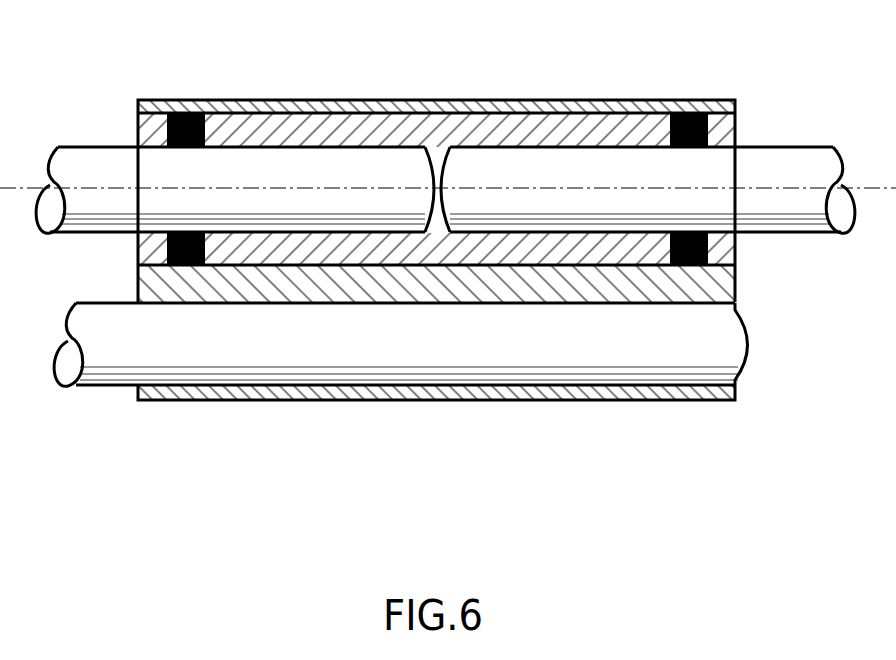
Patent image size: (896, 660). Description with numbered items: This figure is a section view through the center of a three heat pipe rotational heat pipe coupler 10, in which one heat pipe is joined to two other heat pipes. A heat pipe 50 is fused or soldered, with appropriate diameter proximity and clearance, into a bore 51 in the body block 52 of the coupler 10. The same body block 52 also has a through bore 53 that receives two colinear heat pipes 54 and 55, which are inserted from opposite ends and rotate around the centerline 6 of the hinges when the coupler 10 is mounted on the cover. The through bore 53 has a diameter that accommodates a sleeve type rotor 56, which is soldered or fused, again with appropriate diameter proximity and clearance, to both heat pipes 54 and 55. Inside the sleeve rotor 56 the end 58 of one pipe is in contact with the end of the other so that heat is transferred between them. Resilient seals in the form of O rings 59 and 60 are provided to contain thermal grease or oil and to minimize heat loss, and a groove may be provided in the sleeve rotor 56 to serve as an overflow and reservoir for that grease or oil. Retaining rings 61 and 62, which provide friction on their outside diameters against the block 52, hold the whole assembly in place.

The centerline 6 is at (80, 186).
The coupler 10 is at (378, 445).
The heat pipe 50 is at (630, 357).
The bore 51 is at (138, 387).
The body block 52 is at (295, 104).
The through bore 53 is at (737, 112).
The heat pipe 54 is at (113, 157).
The heat pipe 55 is at (773, 173).
The sleeve type rotor 56 is at (638, 135).
The end of heat pipe 58 is at (430, 186).
The O ring 59 is at (182, 108).
The O ring 60 is at (695, 108).
The retaining ring 61 is at (152, 137).
The retaining ring 62 is at (733, 250).